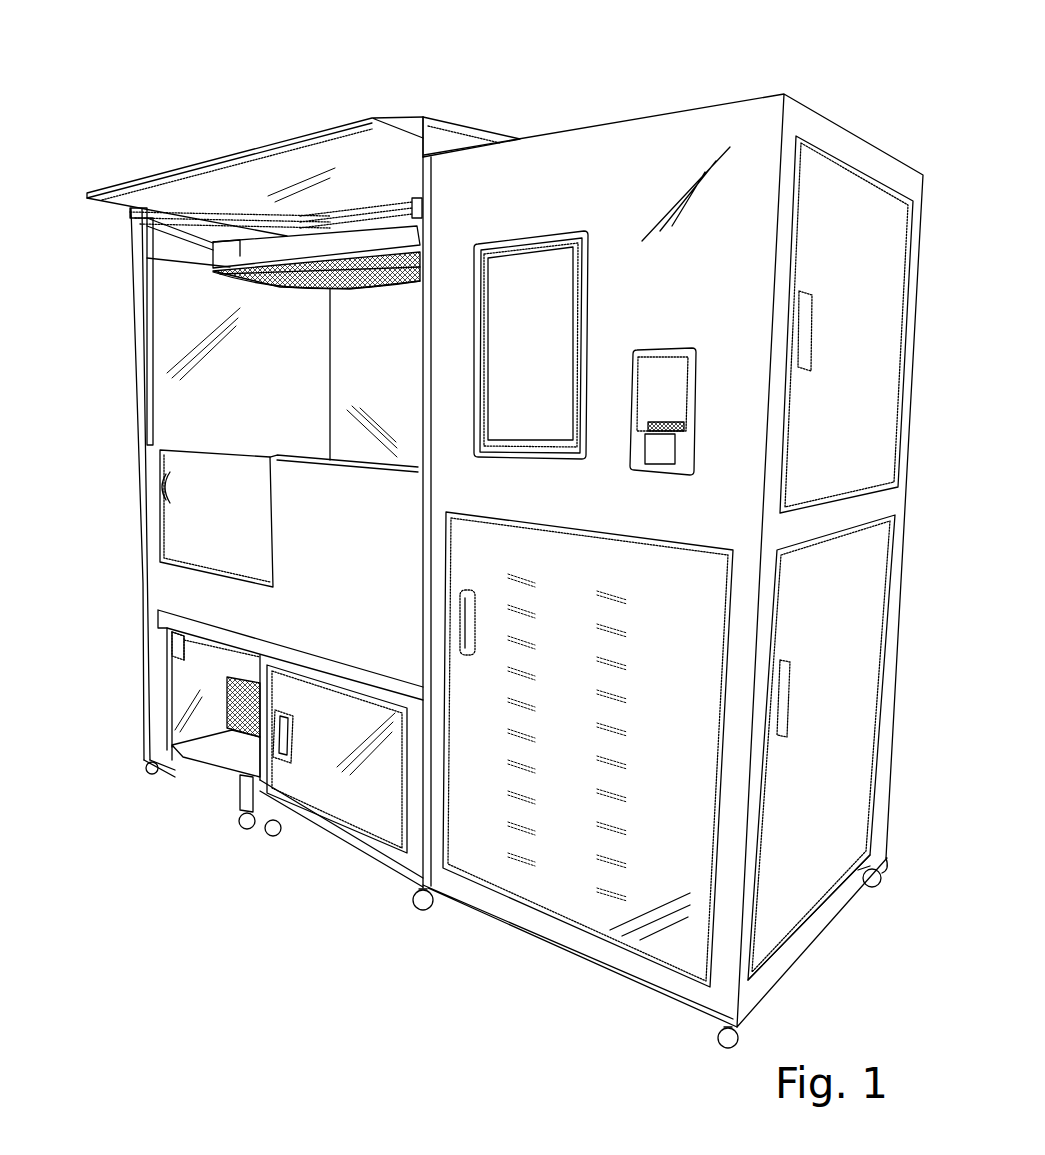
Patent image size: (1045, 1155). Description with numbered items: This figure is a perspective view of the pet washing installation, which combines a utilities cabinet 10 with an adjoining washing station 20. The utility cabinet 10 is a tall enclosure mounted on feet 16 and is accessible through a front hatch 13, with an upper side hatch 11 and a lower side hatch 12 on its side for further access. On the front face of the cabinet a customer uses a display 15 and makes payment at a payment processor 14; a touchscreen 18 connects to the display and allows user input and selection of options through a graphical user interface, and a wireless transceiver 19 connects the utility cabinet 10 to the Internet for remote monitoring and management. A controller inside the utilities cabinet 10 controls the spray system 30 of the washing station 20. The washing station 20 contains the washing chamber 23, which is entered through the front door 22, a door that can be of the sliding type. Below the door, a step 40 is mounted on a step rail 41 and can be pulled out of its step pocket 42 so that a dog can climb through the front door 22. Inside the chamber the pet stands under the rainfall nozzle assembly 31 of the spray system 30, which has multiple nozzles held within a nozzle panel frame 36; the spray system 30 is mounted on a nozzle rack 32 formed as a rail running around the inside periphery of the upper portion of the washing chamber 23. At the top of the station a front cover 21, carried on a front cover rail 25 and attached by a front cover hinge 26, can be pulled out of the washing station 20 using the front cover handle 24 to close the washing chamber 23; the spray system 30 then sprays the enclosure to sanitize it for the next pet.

The utilities cabinet 10 is at (613, 148).
The upper side hatch 11 is at (872, 200).
The lower side hatch 12 is at (893, 573).
The front hatch 13 is at (680, 953).
The payment processor 14 is at (686, 379).
The display 15 is at (531, 347).
The feet 16 is at (882, 877).
The touch screen 18 is at (541, 425).
The transceiver 19 is at (696, 405).
The washing station 20 is at (303, 123).
The front cover 21 is at (103, 186).
The front door 22 is at (230, 422).
The washing chamber 23 is at (203, 537).
The front cover handle 24 is at (237, 170).
The front cover rail 25 is at (130, 215).
The front cover hinge 26 is at (442, 125).
The spray system 30 is at (240, 252).
The rainfall nozzle assembly 31 is at (257, 287).
The nozzle rack 32 is at (365, 170).
The nozzle panel frame 36 is at (372, 273).
The step 40 is at (222, 757).
The step rail 41 is at (183, 652).
The step pocket 42 is at (252, 748).